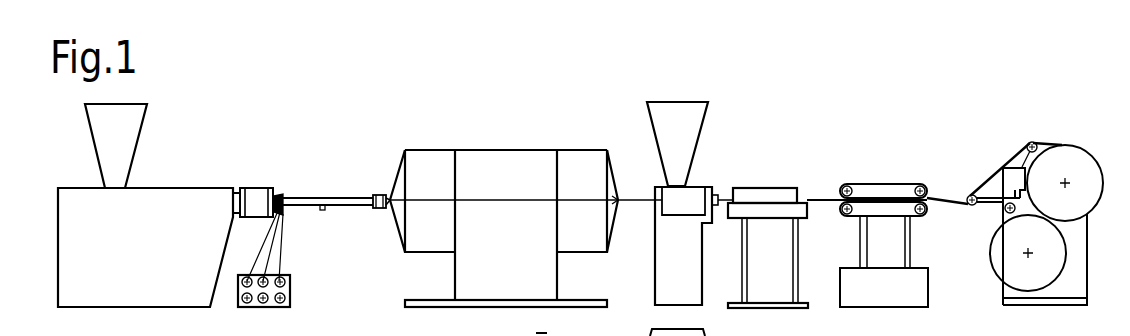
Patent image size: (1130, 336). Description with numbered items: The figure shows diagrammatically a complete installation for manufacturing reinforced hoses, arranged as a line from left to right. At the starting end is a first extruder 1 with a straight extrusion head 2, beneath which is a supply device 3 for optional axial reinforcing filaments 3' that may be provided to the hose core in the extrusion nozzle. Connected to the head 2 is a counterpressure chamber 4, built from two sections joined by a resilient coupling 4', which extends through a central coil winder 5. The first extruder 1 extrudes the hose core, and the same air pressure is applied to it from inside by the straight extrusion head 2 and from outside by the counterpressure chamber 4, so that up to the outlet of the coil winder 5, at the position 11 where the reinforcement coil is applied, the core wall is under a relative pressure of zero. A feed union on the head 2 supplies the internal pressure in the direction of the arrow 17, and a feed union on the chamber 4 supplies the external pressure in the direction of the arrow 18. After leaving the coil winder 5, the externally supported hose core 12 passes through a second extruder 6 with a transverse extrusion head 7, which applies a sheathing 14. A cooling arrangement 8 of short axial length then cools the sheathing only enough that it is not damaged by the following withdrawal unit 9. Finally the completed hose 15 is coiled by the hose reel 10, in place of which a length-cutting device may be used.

The first extruder 1 is at (194, 182).
The straight extrusion head 2 is at (260, 196).
The supply device 3 is at (285, 305).
The axial reinforcing filaments 3' is at (286, 249).
The counterpressure chamber 4 is at (328, 182).
The resilient coupling 4' is at (385, 183).
The central coil winder 5 is at (571, 146).
The second extruder 6 is at (721, 178).
The transverse extrusion head 7 is at (691, 190).
The cooling arrangement 8 is at (778, 178).
The withdrawal unit 9 is at (890, 177).
The hose reel 10 is at (1005, 160).
The position where the reinforcement coil is applied 11 is at (620, 197).
The hose core 12 is at (641, 205).
The sheathing 14 is at (818, 197).
The completed hose 15 is at (957, 208).
The arrow indicating internal pressure feed direction 17 is at (258, 219).
The arrow indicating external pressure feed direction 18 is at (322, 212).